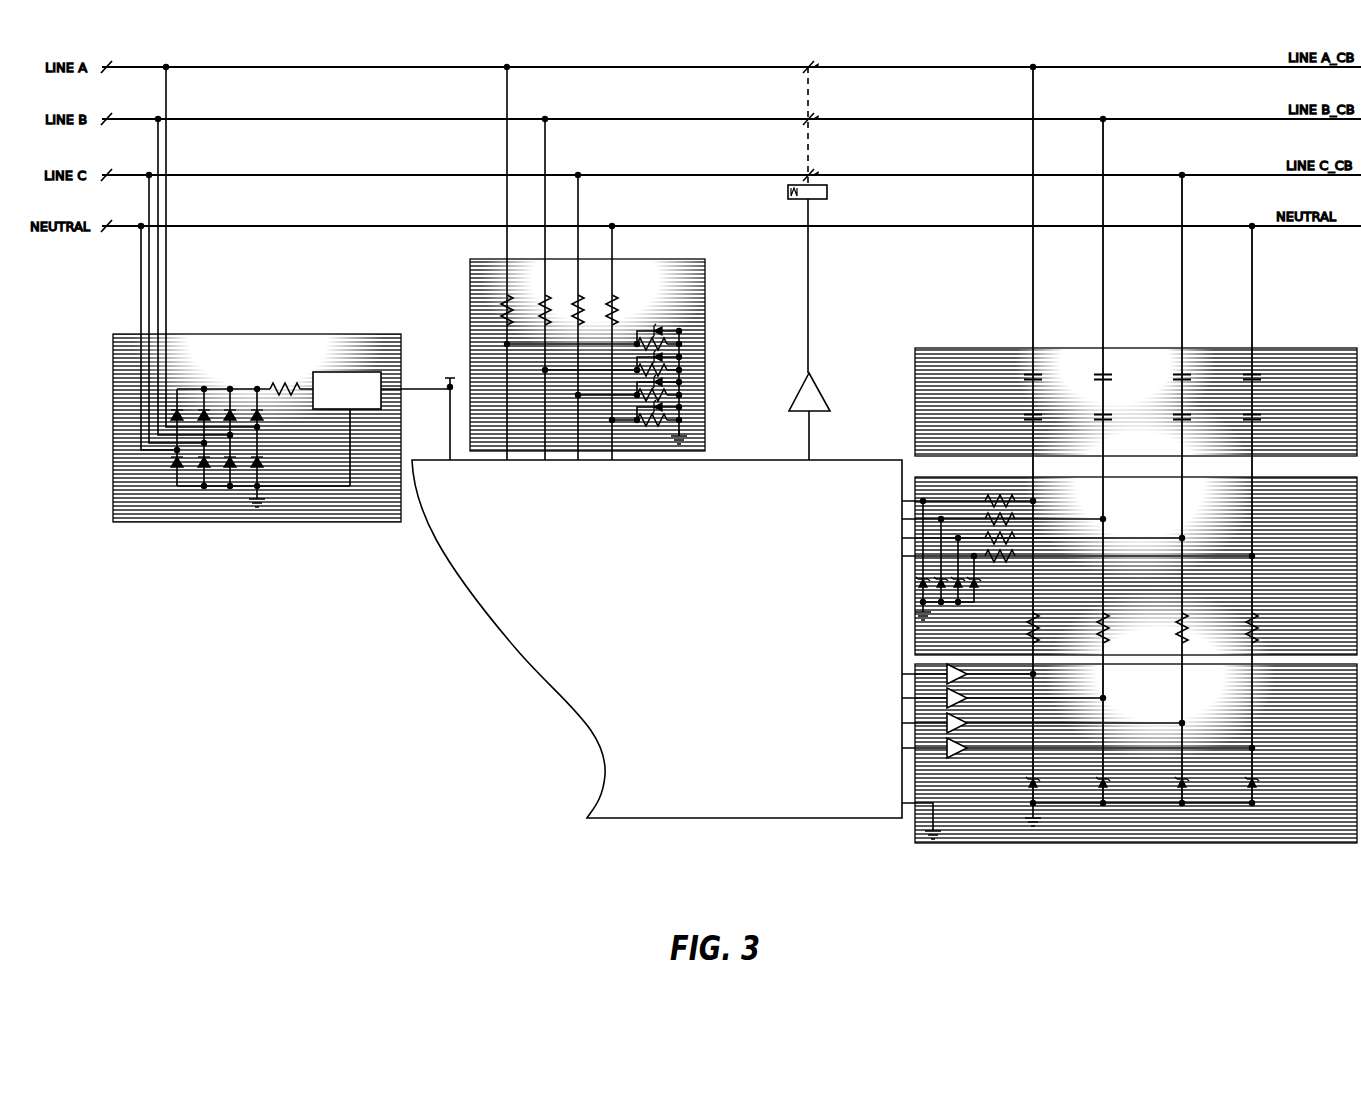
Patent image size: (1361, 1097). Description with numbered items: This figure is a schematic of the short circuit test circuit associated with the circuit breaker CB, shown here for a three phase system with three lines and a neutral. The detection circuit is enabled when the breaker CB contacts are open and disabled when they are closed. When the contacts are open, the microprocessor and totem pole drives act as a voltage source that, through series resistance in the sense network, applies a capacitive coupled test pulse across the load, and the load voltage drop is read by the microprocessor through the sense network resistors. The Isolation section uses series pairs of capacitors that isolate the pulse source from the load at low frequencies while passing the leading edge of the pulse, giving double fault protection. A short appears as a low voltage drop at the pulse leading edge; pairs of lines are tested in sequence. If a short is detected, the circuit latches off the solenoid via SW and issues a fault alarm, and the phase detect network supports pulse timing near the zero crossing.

The circuit breaker CB is at (807, 121).
The solenoid latch switch SW is at (809, 342).
The isolation Isolation is at (1136, 402).